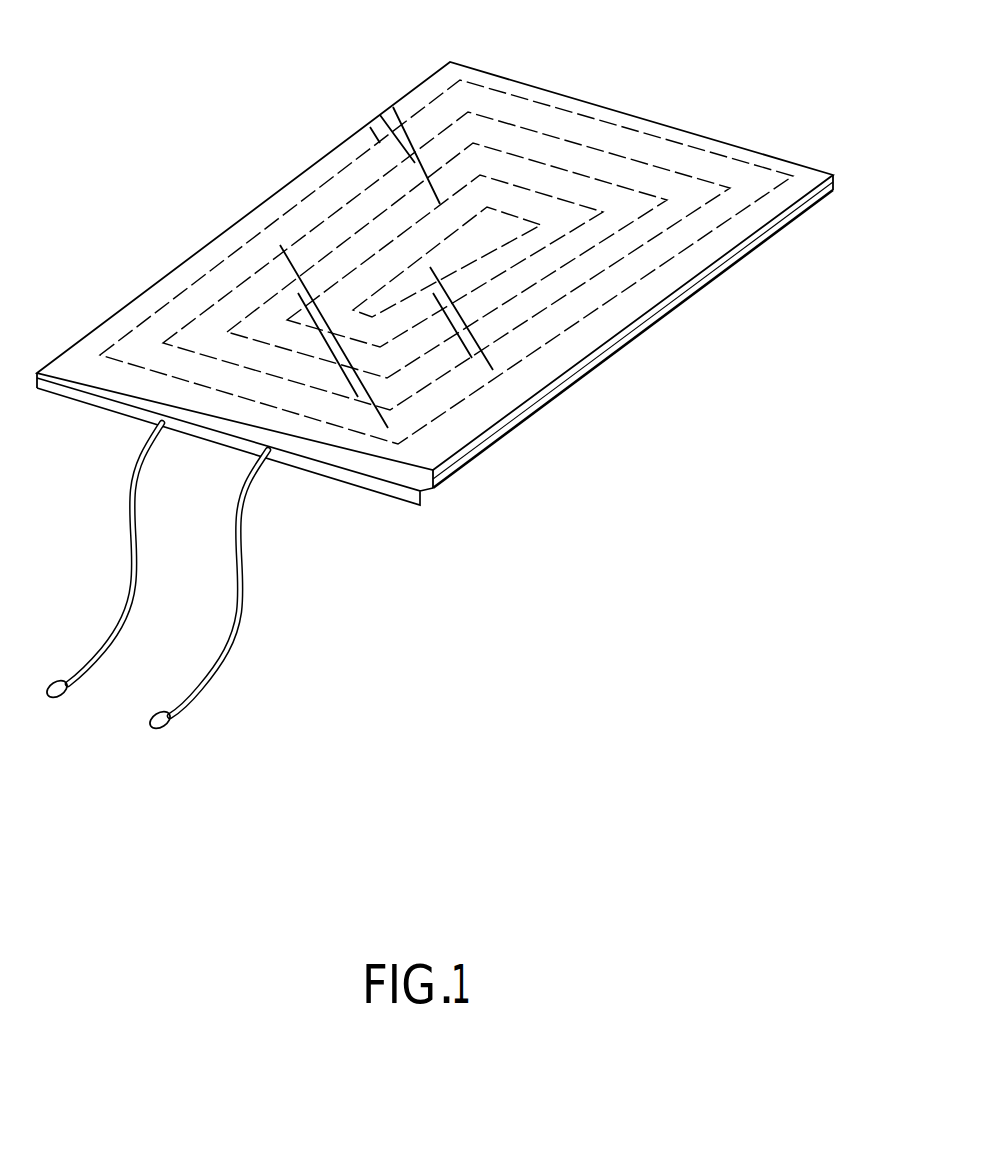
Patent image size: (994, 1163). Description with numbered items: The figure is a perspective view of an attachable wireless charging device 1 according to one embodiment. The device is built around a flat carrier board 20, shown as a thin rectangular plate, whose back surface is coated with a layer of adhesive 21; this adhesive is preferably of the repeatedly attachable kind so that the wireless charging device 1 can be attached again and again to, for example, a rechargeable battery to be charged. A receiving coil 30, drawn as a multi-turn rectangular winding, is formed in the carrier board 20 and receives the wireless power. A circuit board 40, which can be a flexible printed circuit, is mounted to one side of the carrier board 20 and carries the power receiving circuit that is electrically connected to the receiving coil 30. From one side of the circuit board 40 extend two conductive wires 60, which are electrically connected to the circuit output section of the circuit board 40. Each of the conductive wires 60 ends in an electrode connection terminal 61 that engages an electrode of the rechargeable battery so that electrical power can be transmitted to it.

The attachable wireless charging device 1 is at (656, 85).
The carrier board 20 is at (782, 163).
The adhesive layer 21 is at (533, 418).
The receiving coil 30 is at (603, 212).
The circuit board 40 is at (316, 470).
The conductive wires 60 is at (135, 578).
The electrode connection terminal 61 is at (66, 690).